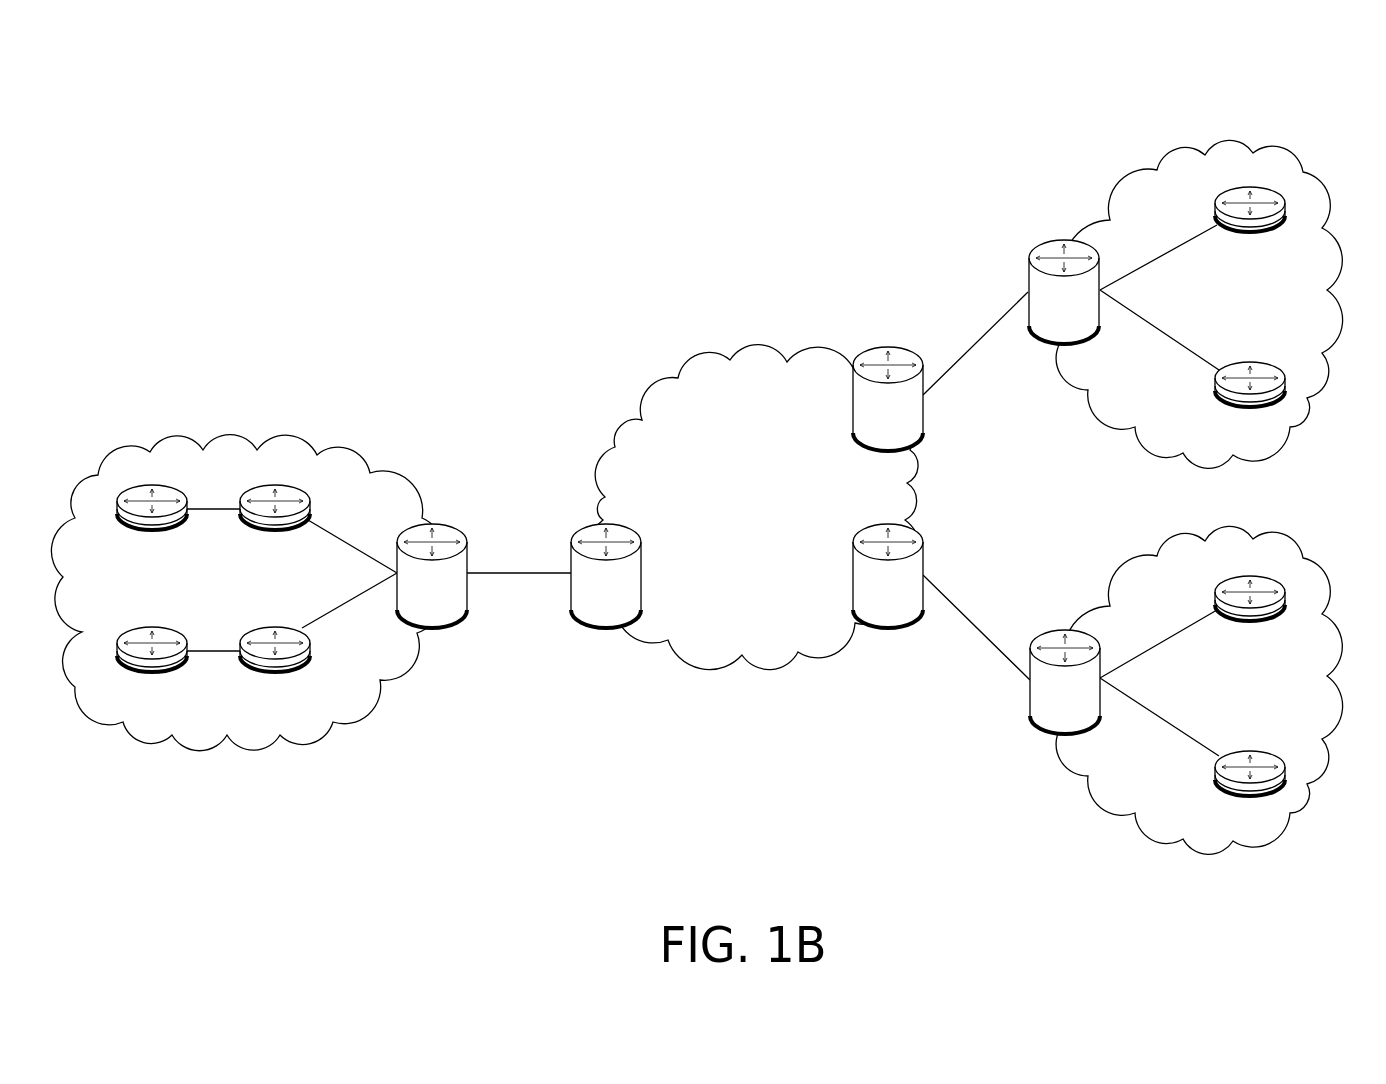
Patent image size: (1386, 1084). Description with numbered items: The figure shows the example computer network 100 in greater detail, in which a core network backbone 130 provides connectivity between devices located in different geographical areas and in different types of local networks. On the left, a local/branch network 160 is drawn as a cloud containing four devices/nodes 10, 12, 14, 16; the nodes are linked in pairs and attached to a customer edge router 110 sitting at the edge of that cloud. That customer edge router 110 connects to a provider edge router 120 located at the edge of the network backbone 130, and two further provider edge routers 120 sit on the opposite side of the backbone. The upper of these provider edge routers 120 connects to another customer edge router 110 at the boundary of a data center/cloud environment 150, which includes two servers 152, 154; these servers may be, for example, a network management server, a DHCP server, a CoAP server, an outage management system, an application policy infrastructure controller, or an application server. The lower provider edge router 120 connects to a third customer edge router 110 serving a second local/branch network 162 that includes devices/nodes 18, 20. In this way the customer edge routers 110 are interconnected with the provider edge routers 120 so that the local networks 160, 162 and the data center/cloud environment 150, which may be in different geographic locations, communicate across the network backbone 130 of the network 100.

The computer network 100 is at (1290, 92).
The device/node 10 is at (152, 526).
The device/node 12 is at (275, 526).
The device/node 14 is at (152, 668).
The device/node 16 is at (275, 668).
The device/node 18 is at (1250, 791).
The device/node 20 is at (1250, 616).
The customer edge (CE) router 110 is at (416, 612).
The provider edge (PE) router 120 is at (590, 612).
The network backbone 130 is at (734, 531).
The data center/cloud environment 150 is at (1160, 170).
The server 152 is at (1250, 227).
The server 154 is at (1250, 403).
The local/branch network 160 is at (290, 433).
The local/branch network 162 is at (1080, 777).